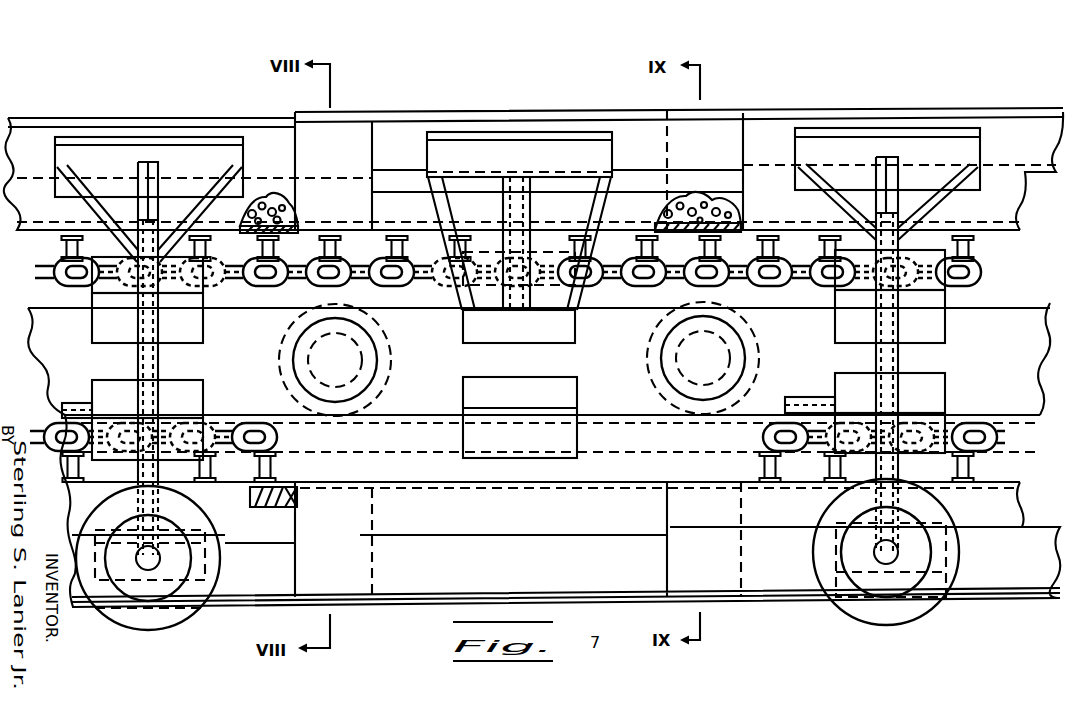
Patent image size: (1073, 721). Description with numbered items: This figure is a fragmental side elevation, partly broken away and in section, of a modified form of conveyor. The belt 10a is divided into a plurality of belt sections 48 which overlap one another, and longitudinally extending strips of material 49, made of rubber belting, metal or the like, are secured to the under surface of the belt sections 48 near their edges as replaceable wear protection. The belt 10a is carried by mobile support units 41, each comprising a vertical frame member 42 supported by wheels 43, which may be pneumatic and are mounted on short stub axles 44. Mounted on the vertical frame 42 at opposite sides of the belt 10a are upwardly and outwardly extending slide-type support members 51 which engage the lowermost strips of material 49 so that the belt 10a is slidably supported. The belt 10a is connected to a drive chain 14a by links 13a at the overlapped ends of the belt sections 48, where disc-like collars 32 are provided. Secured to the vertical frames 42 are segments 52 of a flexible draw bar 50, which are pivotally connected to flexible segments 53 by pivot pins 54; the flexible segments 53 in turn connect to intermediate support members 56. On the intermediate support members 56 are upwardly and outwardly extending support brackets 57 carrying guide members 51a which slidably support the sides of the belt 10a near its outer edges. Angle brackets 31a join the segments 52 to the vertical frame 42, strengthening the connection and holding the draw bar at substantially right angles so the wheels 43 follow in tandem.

The belt 10a is at (623, 521).
The links 13a is at (322, 246).
The drive chain 14a is at (985, 267).
The angle brackets 31a is at (820, 400).
The support bracket 32 is at (792, 222).
The mobile support units 41 is at (160, 370).
The vertical frame members 42 is at (152, 412).
The wheels 43 is at (212, 577).
The stub axles 44 is at (160, 556).
The belt sections 48 is at (648, 113).
The strips of material 49 is at (400, 137).
The flexible draw bar 50 is at (428, 388).
The slide-type support members 51 is at (205, 150).
The guide members 51a is at (600, 161).
The segments of the flexible draw bar 52 is at (80, 355).
The flexible segments 53 is at (437, 371).
The pivot pins 54 is at (365, 350).
The intermediate support members 56 is at (575, 320).
The support brackets 57 is at (520, 217).